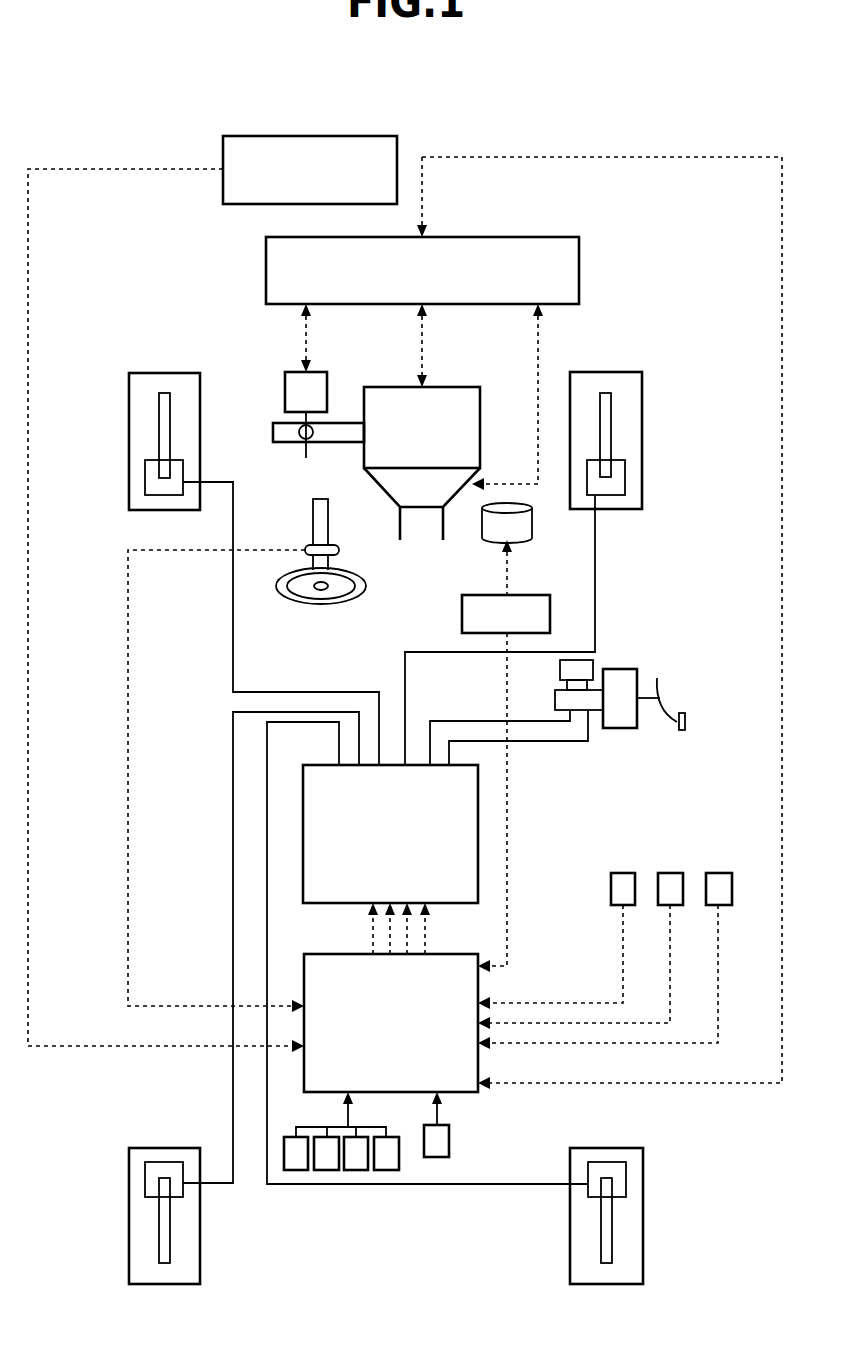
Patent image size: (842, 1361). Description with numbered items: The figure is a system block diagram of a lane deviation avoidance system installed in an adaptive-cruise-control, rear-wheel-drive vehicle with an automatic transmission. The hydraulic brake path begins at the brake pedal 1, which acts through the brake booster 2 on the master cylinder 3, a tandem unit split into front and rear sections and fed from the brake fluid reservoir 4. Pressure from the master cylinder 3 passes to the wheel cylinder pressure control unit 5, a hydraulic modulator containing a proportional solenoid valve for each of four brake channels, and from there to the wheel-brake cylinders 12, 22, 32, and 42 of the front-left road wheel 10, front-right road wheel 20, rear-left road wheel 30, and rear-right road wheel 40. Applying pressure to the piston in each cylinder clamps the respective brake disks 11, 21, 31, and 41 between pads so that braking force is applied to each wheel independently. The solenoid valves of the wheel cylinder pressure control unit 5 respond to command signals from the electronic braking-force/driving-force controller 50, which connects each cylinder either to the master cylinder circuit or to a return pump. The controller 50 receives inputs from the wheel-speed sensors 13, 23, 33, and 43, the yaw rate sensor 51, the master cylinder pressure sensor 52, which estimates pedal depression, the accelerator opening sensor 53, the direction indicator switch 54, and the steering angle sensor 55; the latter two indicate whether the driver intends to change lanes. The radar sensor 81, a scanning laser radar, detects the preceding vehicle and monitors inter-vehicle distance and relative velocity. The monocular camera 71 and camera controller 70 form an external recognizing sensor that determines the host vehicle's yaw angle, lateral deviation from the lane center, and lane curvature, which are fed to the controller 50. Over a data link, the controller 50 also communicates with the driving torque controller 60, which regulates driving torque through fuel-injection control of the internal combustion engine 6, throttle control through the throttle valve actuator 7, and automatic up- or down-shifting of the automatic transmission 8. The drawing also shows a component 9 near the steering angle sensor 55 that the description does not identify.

The brake pedal 1 is at (676, 706).
The brake booster 2 is at (624, 729).
The master cylinder 3 is at (555, 698).
The brake fluid reservoir 4 is at (593, 667).
The wheel cylinder pressure control unit 5 is at (307, 764).
The internal combustion engine 6 is at (460, 386).
The throttle valve actuator 7 is at (285, 378).
The automatic transmission 8 is at (384, 490).
The steering wheel 9 is at (320, 605).
The front-left road wheel 10 is at (129, 386).
The front-left-wheel brake disk 11 is at (159, 431).
The front-left wheel-brake cylinder 12 is at (145, 476).
The front-left wheel-speed sensor 13 is at (296, 1170).
The front-right road wheel 20 is at (642, 383).
The front-right-wheel brake disk 21 is at (611, 430).
The front-right wheel-brake cylinder 22 is at (625, 473).
The front-right wheel-speed sensor 23 is at (327, 1170).
The rear-left road wheel 30 is at (145, 1178).
The rear-left-wheel brake disk 31 is at (129, 1253).
The rear-left wheel-brake cylinder 32 is at (159, 1215).
The rear-left wheel-speed sensor 33 is at (356, 1170).
The rear-right road wheel 40 is at (626, 1175).
The rear-right-wheel brake disk 41 is at (643, 1252).
The rear-right wheel-brake cylinder 42 is at (612, 1215).
The rear-right wheel-speed sensor 43 is at (386, 1170).
The electronic braking-force/driving-force controller 50 is at (309, 953).
The yaw rate sensor 51 is at (622, 872).
The master cylinder pressure sensor 52 is at (670, 872).
The accelerator opening sensor 53 is at (718, 872).
The direction indicator switch 54 is at (449, 1140).
The steering angle sensor 55 is at (305, 548).
The driving torque controller 60 is at (546, 236).
The camera controller 70 is at (462, 614).
The monocular camera 71 is at (523, 522).
The radar sensor 81 is at (362, 134).